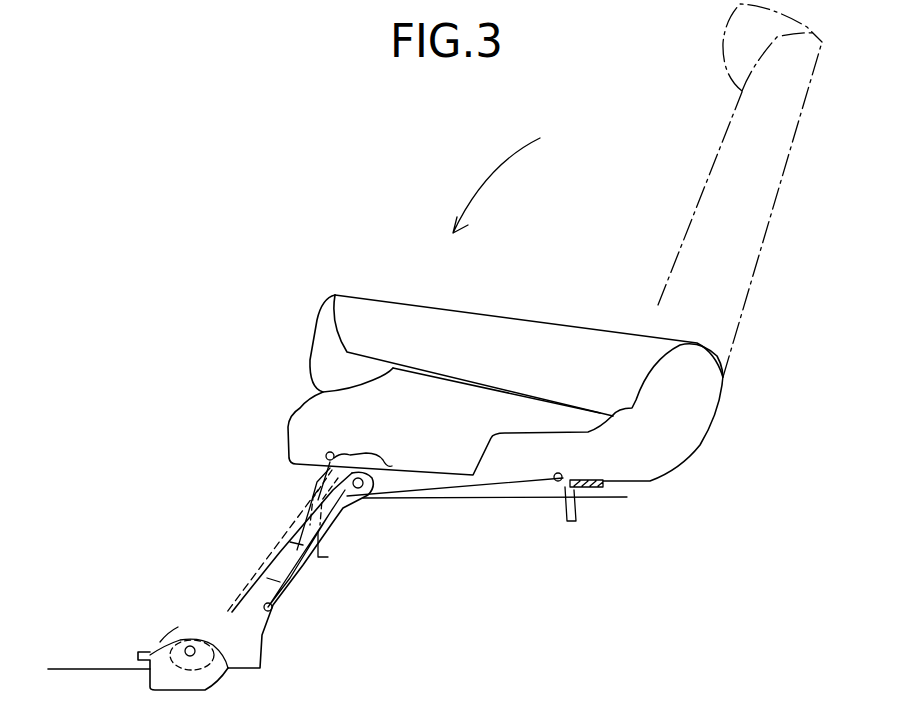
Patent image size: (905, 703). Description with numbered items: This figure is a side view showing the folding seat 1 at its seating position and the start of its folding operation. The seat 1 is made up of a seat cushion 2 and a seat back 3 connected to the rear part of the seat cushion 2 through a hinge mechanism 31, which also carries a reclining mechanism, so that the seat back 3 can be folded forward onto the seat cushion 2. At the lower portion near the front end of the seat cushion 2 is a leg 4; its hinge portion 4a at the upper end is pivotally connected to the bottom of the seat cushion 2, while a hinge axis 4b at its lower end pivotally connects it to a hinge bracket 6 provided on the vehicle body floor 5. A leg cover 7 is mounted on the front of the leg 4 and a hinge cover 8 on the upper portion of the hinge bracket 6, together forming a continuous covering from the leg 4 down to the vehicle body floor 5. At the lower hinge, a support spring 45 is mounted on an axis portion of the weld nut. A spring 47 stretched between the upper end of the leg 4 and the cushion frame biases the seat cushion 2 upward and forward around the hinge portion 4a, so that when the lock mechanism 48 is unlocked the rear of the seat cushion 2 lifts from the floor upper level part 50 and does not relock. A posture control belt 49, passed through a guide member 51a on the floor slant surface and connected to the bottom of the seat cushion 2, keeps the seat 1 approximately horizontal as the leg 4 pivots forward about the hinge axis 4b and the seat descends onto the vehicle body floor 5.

The folding seat 1 is at (281, 170).
The seat cushion 2 is at (298, 408).
The seat back 3 is at (380, 297).
The hinge mechanism 31 is at (705, 413).
The leg 4 is at (240, 596).
The hinge portion 4a is at (362, 495).
The hinge axis 4b is at (173, 642).
The vehicle body floor 5 is at (60, 668).
The hinge bracket 6 is at (187, 687).
The leg cover 7 is at (283, 537).
The hinge cover 8 is at (163, 640).
The support spring 45 is at (178, 627).
The spring 47 is at (313, 495).
The lock mechanism 48 is at (577, 505).
The posture control belt 49 is at (448, 498).
The floor upper level part 50 is at (625, 490).
The guide member 51a is at (273, 610).